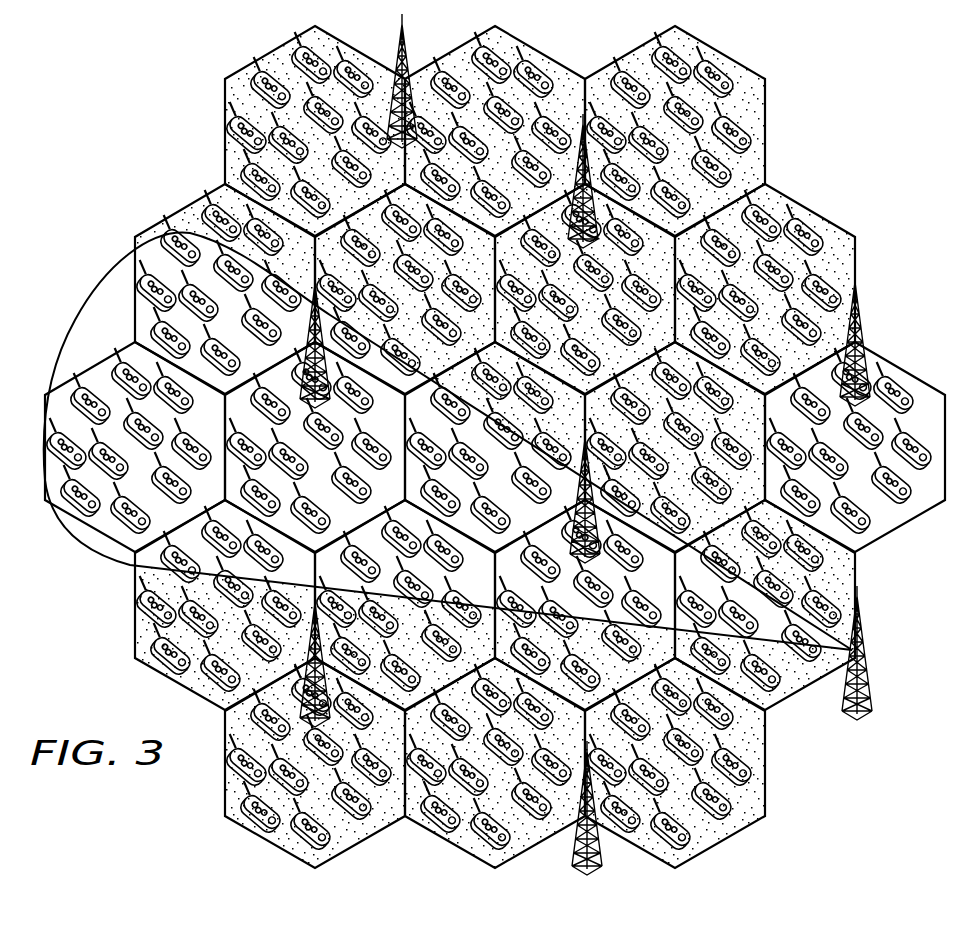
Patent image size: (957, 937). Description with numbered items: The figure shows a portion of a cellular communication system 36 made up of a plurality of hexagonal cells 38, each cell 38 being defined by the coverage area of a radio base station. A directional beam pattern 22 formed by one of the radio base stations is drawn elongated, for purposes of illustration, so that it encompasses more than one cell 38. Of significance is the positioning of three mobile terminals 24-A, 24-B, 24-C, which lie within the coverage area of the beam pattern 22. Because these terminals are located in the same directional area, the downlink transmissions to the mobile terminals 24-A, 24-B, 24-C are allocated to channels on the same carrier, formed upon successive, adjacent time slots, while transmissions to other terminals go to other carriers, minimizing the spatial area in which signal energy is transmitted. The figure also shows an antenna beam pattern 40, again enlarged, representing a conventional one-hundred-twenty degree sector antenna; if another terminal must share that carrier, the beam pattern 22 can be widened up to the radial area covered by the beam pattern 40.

The cellular communication system 36 is at (160, 105).
The antenna beam pattern 40 is at (763, 114).
The cell 38 is at (922, 378).
The directional beam pattern 22 is at (100, 293).
The mobile terminal 24-A is at (806, 650).
The mobile terminal 24-B is at (752, 606).
The mobile terminal 24-C is at (706, 590).